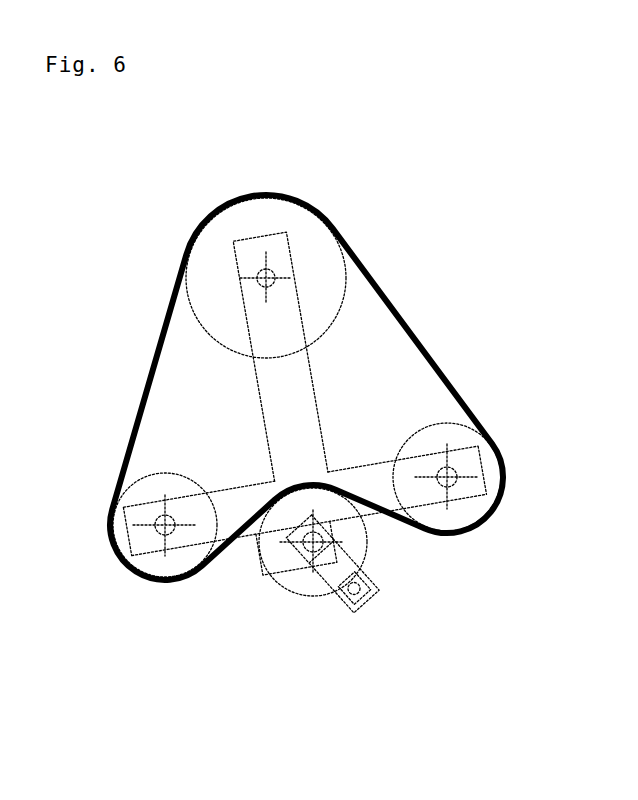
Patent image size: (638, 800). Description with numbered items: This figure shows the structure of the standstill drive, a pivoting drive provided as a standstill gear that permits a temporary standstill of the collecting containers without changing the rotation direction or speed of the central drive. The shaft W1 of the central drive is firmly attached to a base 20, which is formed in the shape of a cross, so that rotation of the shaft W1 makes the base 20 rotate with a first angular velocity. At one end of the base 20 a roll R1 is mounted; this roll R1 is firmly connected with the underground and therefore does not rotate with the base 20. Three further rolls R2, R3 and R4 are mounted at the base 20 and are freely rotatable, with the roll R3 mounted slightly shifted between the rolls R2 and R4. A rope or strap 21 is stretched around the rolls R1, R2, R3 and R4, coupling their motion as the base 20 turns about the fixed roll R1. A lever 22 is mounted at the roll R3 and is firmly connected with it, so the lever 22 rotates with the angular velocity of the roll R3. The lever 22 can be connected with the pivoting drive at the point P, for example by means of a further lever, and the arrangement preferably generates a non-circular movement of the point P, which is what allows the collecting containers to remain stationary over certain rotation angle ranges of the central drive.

The base 20 is at (277, 375).
The rope or strap 21 is at (428, 355).
The lever 22 is at (307, 518).
The point P is at (360, 589).
The roll R1 is at (307, 258).
The roll R2 is at (169, 561).
The roll R3 is at (295, 580).
The roll R4 is at (470, 437).
The shaft W1 is at (266, 278).